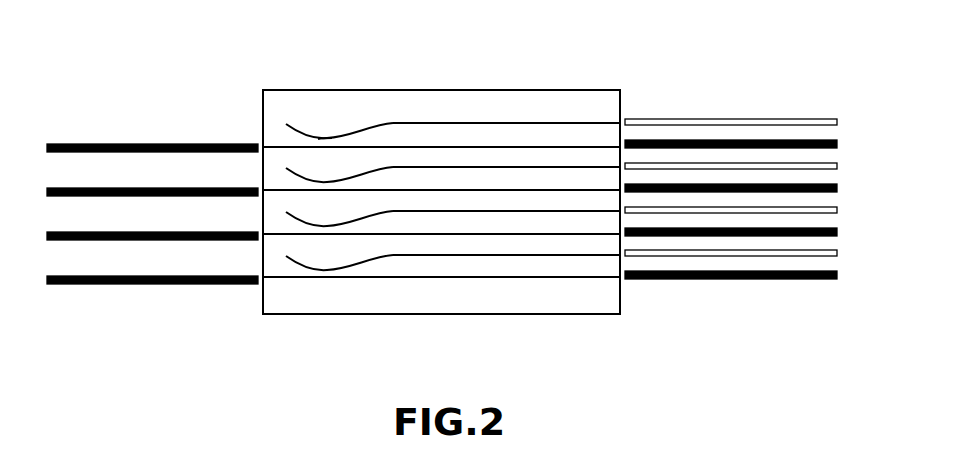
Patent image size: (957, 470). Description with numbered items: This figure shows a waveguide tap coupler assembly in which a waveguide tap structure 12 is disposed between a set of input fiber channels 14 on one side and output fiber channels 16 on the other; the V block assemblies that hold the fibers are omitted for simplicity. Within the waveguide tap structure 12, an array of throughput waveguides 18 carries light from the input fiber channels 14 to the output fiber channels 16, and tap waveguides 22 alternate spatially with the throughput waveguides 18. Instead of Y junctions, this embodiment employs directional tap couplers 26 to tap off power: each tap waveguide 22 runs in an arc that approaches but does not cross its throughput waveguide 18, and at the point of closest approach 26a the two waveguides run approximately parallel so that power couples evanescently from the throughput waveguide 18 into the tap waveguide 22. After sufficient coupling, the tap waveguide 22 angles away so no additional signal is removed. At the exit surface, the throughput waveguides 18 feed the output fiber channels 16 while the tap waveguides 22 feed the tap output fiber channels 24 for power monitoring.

The waveguide tap structure 12 is at (383, 315).
The input fiber channels 14 is at (130, 285).
The output fiber channels 16 is at (752, 280).
The throughput waveguides 18 is at (565, 143).
The tap waveguides 22 is at (467, 122).
The tap output fiber channels 24 is at (800, 256).
The directional tap coupler 26 is at (316, 123).
The point of closest approach 26a is at (332, 135).